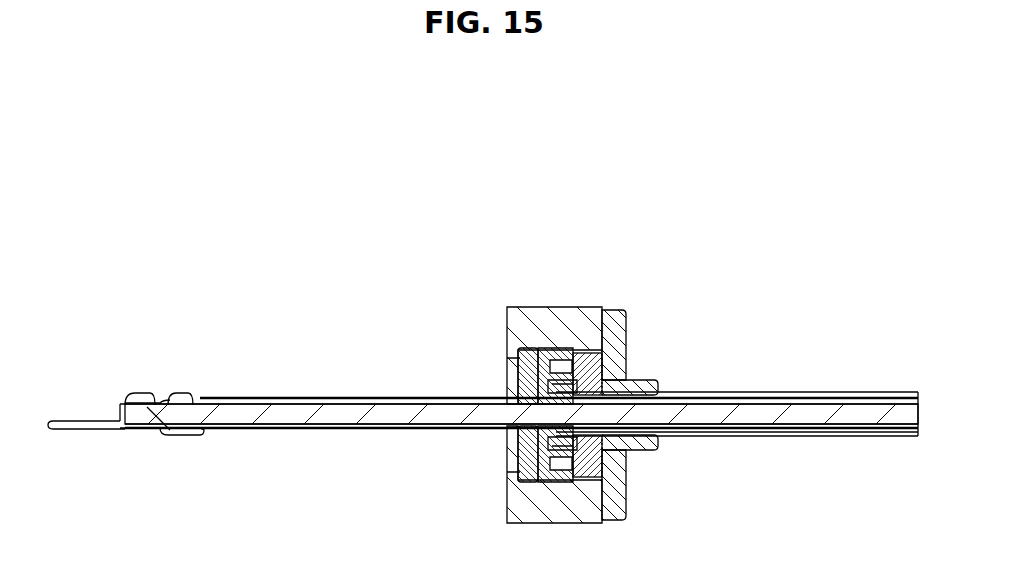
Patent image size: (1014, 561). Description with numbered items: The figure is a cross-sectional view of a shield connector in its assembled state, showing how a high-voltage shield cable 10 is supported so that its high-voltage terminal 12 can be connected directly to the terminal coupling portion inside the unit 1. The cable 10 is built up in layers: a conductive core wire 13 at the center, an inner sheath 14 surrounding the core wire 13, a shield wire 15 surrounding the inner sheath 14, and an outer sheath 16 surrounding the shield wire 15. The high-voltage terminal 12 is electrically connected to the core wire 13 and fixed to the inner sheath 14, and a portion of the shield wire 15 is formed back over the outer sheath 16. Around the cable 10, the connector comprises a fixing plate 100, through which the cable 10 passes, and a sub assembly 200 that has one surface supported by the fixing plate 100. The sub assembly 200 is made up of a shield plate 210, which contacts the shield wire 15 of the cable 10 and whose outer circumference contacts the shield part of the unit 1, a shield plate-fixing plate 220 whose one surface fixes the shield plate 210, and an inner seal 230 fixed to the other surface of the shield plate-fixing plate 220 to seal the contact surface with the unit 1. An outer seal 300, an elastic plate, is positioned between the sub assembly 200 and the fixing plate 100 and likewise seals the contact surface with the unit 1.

The unit 1 is at (507, 492).
The high-voltage shield cable 10 is at (292, 385).
The high-voltage terminal 12 is at (105, 420).
The core wire 13 is at (800, 417).
The inner sheath 14 is at (837, 430).
The shield wire 15 is at (518, 382).
The outer sheath 16 is at (878, 438).
The fixing plate 100 is at (627, 323).
The sub assembly 200 is at (632, 230).
The shield plate 210 is at (588, 357).
The shield plate-fixing plate 220 is at (557, 360).
The inner seal 230 is at (533, 357).
The outer seal 300 is at (615, 362).